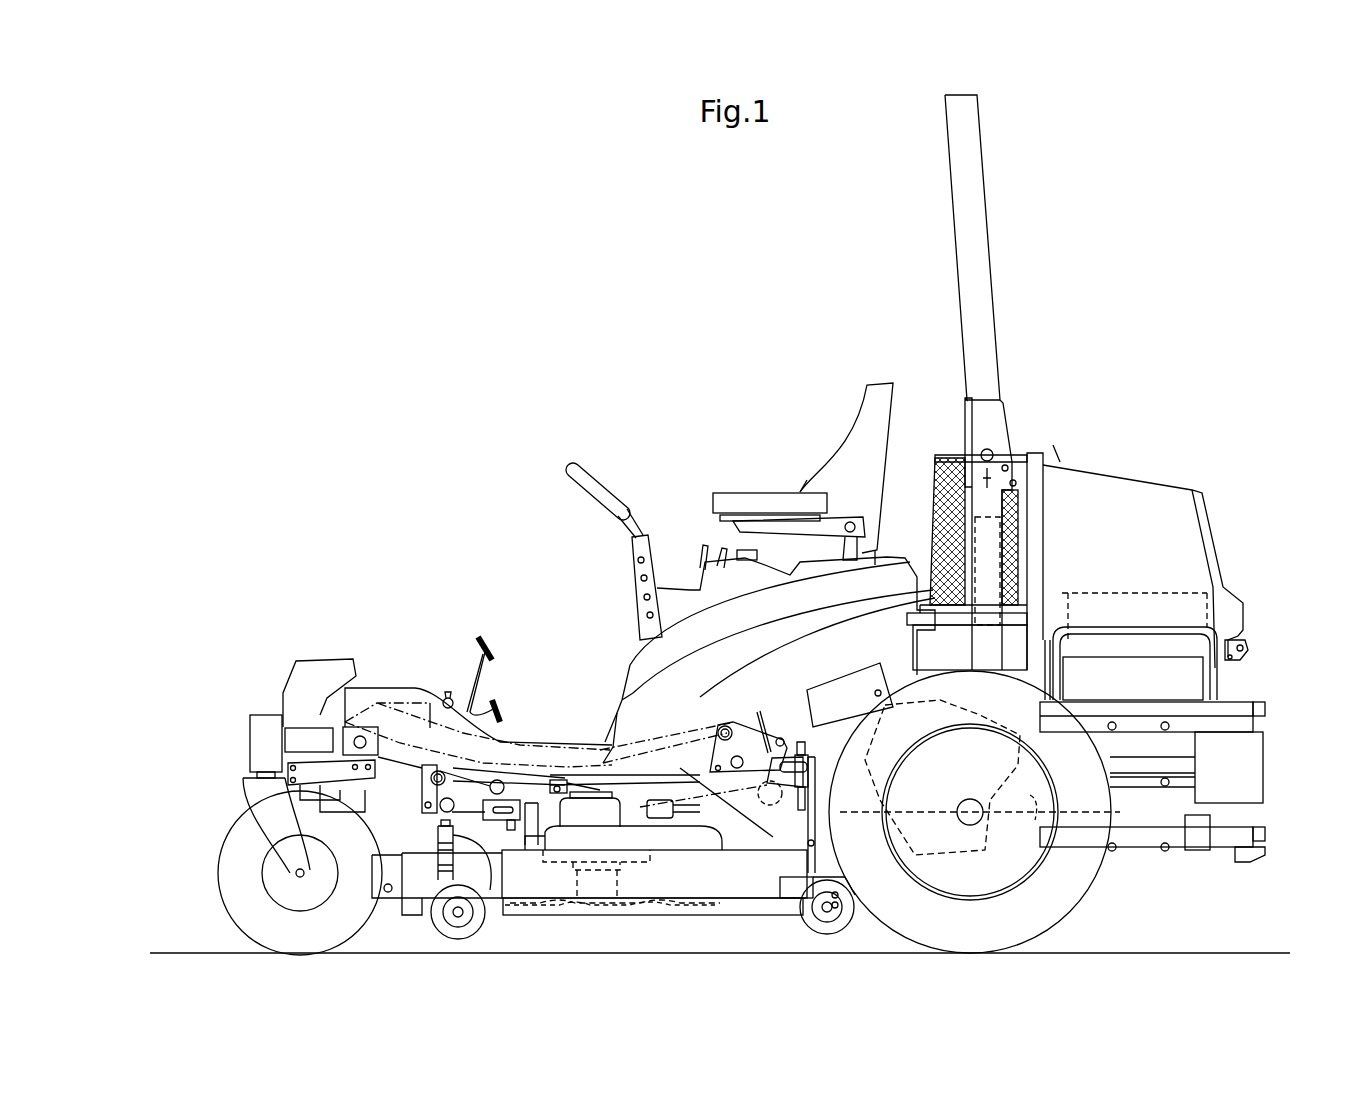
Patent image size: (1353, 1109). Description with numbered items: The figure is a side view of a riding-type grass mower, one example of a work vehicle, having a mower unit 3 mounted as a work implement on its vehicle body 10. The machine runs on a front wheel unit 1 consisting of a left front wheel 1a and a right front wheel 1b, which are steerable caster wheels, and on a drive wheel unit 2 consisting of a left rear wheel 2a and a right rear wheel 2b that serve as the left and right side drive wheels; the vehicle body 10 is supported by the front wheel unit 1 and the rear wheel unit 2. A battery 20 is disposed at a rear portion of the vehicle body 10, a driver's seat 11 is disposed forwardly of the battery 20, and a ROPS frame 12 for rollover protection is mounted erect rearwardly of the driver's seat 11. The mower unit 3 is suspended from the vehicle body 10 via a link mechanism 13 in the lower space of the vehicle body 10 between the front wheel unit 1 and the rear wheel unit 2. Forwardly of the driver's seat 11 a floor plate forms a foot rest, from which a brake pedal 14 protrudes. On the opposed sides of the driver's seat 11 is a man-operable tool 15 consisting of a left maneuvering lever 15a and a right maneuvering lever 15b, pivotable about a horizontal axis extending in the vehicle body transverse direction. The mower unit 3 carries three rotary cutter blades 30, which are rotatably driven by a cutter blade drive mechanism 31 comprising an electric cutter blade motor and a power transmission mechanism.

The front wheel unit 1 is at (243, 866).
The left front wheel 1a is at (243, 866).
The right front wheel 1b is at (227, 880).
The drive wheel unit 2 is at (1026, 812).
The left rear wheel 2a is at (1026, 812).
The right rear wheel 2b is at (1083, 877).
The mower unit 3 is at (705, 920).
The vehicle body 10 is at (403, 687).
The driver's seat 11 is at (848, 448).
The ROPS frame 12 is at (963, 217).
The link mechanism 13 is at (418, 812).
The brake pedal 14 is at (489, 645).
The man-operable tool 15 is at (551, 551).
The left maneuvering lever 15a is at (551, 551).
The right maneuvering lever 15b is at (590, 493).
The battery 20 is at (1200, 680).
The cutter blade 30 is at (565, 912).
The cutter blade drive mechanism 31 is at (588, 790).